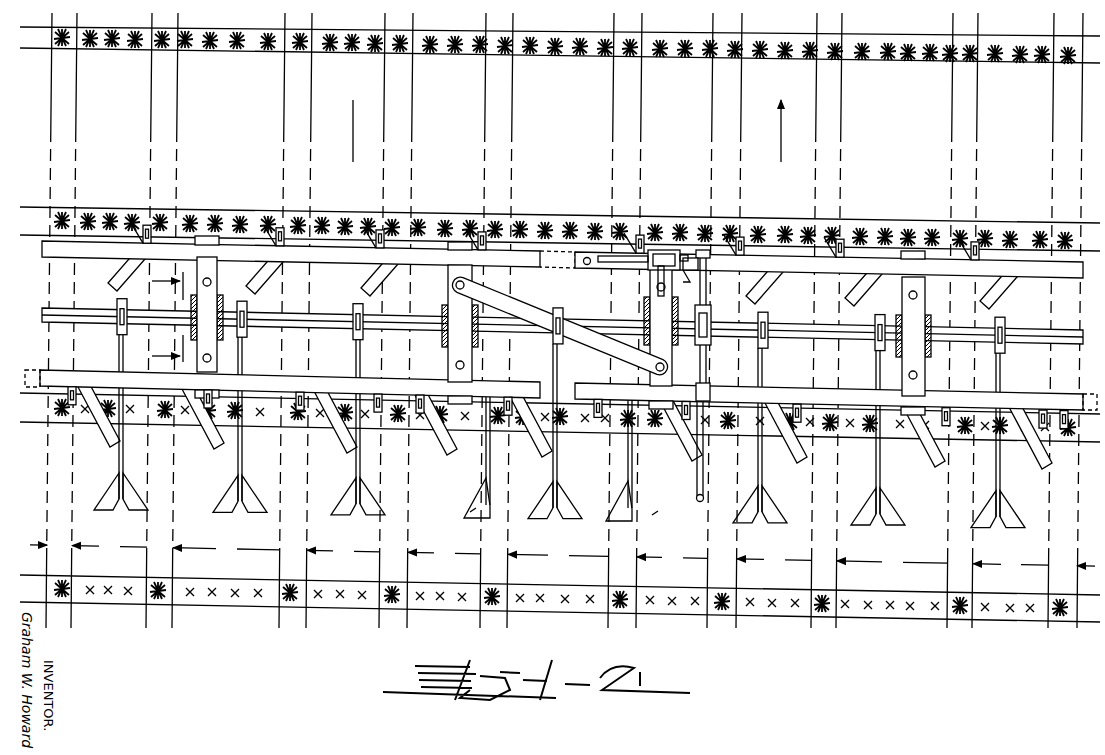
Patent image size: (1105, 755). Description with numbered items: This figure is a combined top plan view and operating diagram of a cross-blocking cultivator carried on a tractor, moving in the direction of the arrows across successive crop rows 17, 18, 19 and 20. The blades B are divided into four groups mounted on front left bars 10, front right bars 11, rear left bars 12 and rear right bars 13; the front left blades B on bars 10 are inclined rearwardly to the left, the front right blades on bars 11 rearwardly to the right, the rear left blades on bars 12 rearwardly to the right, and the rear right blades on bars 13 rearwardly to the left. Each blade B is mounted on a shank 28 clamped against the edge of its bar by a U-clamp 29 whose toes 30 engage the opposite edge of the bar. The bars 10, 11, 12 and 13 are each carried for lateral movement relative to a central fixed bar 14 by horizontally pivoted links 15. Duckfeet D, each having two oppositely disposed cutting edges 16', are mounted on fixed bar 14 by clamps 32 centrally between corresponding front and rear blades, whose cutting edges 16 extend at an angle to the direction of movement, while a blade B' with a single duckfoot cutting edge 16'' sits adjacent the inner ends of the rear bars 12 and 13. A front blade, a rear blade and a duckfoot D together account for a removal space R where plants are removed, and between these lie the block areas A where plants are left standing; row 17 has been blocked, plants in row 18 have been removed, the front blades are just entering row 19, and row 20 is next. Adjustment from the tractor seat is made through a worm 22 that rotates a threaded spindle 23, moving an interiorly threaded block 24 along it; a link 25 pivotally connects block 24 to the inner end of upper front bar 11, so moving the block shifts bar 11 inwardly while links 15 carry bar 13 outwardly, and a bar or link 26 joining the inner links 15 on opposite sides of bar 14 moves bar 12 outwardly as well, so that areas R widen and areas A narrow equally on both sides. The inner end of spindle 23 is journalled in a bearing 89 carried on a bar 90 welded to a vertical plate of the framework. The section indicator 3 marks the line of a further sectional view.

The front left bars 10 is at (42, 250).
The front right bars 11 is at (586, 270).
The rear left bars 12 is at (40, 372).
The rear right bars 13 is at (590, 380).
The central fixed bar 14 is at (42, 312).
The links 15 is at (218, 274).
The cutting edges 16 is at (564, 370).
The duckfoot cutting edges 16' is at (565, 427).
The duckfoot cutting edge 16'' is at (563, 462).
The crop row 17 is at (42, 600).
The crop row 18 is at (40, 415).
The crop row 19 is at (42, 229).
The crop row 20 is at (42, 46).
The worm 22 is at (712, 262).
The threaded spindle 23 is at (688, 255).
The interiorly threaded block 24 is at (688, 275).
The link 25 is at (606, 258).
The bar or link 26 is at (552, 346).
The shank 28 is at (240, 392).
The U-clamp 29 is at (388, 248).
The toes 30 is at (140, 280).
The clamps 32 is at (248, 305).
The bearing 89 is at (652, 272).
The bar 90 is at (656, 296).
The section line 3 is at (167, 317).
The block areas A is at (559, 555).
The removal spaces R is at (562, 554).
The blades B is at (562, 387).
The blade B' is at (564, 502).
The duckfoot D is at (140, 496).